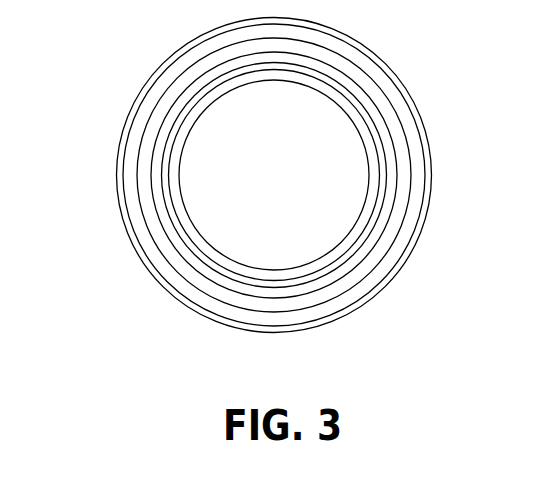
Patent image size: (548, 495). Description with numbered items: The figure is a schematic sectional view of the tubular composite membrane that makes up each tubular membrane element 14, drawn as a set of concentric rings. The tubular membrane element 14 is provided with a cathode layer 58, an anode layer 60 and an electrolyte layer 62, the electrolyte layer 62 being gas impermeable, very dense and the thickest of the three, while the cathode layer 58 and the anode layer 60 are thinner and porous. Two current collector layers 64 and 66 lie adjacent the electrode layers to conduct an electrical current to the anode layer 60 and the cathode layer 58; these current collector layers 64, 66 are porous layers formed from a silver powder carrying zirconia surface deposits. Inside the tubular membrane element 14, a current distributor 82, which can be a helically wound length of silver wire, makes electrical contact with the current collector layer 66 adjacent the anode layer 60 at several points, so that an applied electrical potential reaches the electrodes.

The tubular membrane element 14 is at (186, 341).
The cathode layer 58 is at (148, 245).
The anode layer 60 is at (172, 232).
The electrolyte layer 62 is at (175, 262).
The current collector layer 64 is at (127, 218).
The current collector layer 66 is at (165, 178).
The current distributor 82 is at (367, 183).